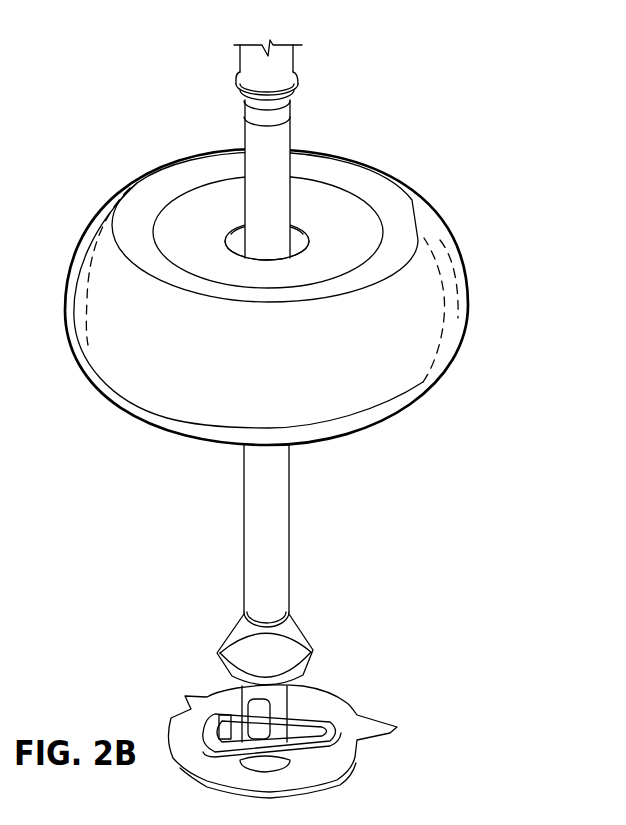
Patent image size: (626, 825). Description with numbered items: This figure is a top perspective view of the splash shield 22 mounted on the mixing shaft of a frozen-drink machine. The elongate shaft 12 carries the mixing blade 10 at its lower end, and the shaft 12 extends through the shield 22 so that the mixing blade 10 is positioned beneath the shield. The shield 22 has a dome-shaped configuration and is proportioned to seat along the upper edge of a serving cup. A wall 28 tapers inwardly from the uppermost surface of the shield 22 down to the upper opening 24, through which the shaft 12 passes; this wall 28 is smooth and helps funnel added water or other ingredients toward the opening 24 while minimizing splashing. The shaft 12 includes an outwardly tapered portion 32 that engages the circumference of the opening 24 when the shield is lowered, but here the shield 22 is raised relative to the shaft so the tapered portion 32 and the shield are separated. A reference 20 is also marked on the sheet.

The mixing blade 10 is at (333, 700).
The elongate shaft 12 is at (279, 140).
The assembly 20 is at (4, 205).
The splash shield 22 is at (87, 365).
The upper opening 24 is at (237, 237).
The wall 28 is at (381, 198).
The outwardly tapered portion 32 is at (296, 628).